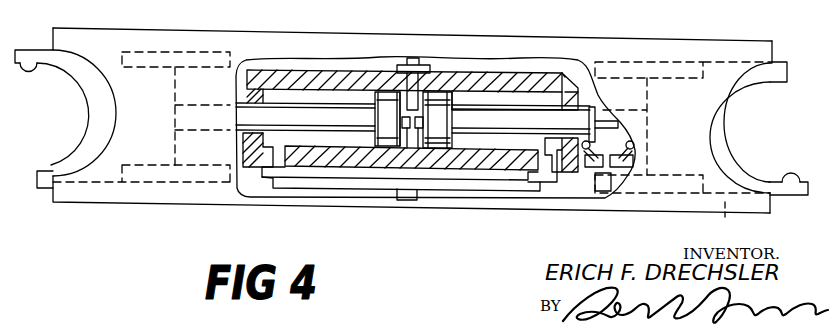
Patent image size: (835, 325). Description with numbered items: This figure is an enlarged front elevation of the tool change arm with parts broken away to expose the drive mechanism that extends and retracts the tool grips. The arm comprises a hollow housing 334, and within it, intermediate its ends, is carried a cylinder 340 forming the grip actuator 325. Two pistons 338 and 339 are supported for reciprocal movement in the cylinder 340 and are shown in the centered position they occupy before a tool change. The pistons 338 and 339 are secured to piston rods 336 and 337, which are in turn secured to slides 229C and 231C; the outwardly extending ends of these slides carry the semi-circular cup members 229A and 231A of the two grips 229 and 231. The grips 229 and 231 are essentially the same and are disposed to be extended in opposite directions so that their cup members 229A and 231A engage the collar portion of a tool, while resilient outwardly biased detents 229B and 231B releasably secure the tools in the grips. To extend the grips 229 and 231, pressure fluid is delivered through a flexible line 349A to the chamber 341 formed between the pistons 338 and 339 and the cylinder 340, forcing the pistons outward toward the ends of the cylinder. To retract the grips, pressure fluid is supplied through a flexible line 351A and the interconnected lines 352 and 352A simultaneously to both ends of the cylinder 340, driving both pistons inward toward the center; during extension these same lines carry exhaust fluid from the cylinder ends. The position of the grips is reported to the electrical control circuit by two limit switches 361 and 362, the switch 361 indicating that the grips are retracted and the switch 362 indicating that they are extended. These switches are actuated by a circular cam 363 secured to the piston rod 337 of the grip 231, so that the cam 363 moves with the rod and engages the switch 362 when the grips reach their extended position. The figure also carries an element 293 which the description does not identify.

The grip 229 is at (48, 171).
The semi-circular cup member 229A is at (100, 113).
The detent 229B is at (28, 73).
The slide 229C is at (93, 60).
The grip 231 is at (793, 195).
The semi-circular cup member 231A is at (724, 115).
The detent 231B is at (791, 173).
The slide 231C is at (725, 216).
The plate 293 is at (339, 2).
The grip actuator 325 is at (477, 180).
The hollow housing 334 is at (128, 199).
The piston rod 336 is at (295, 117).
The piston rod 337 is at (470, 122).
The piston 338 is at (383, 100).
The piston 339 is at (430, 100).
The cylinder 340 is at (543, 80).
The chamber 341 is at (414, 141).
The flexible line 349A is at (413, 58).
The flexible line 351A is at (417, 200).
The line 352 is at (537, 191).
The line 352A is at (322, 190).
The limit switch 361 is at (602, 191).
The limit switch 362 is at (633, 164).
The circular cam 363 is at (597, 114).